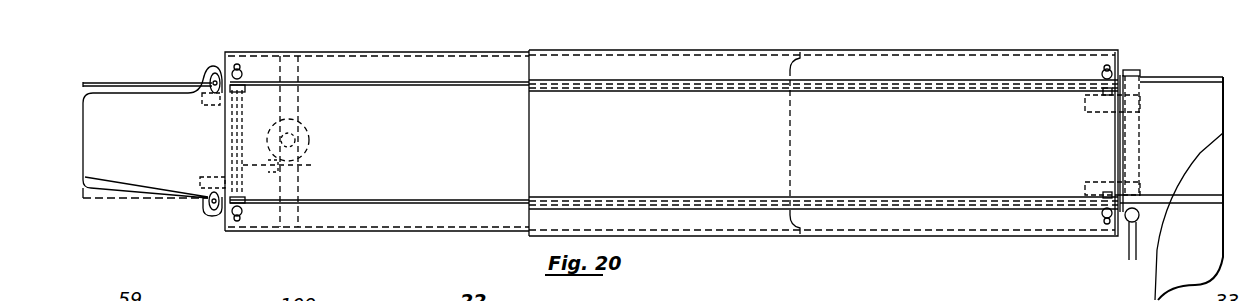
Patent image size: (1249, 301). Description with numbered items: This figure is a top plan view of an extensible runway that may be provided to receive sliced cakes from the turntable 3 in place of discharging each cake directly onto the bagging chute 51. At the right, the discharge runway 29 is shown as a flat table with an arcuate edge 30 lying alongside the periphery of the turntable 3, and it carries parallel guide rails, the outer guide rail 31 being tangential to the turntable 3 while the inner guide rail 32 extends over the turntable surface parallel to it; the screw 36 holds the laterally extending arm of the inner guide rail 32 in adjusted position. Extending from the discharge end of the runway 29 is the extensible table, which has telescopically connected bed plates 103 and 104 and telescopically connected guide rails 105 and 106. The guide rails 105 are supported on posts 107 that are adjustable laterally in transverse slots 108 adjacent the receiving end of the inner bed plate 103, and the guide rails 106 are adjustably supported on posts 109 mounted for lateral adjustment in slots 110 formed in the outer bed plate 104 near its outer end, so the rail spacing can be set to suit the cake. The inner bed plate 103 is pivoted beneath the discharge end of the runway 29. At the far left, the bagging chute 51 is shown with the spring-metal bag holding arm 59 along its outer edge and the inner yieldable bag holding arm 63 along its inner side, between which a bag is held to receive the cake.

The turntable 3 is at (1170, 278).
The discharge runway 29 is at (1155, 88).
The arcuate edge 30 is at (1195, 158).
The outer guide rail 31 is at (1204, 77).
The inner guide rail 32 is at (1203, 203).
The screw 36 is at (1127, 238).
The bagging chute 51 is at (110, 142).
The bag holding arm 59 is at (140, 81).
The inner yieldable bag holding arm 63 is at (108, 193).
The inner bed plate 103 is at (905, 236).
The outer bed plate 104 is at (385, 228).
The guide rails 105 is at (677, 91).
The guide rails 106 is at (428, 85).
The posts 107 is at (1100, 72).
The transverse slots 108 is at (1098, 100).
The posts 109 is at (245, 75).
The slots 110 is at (238, 63).